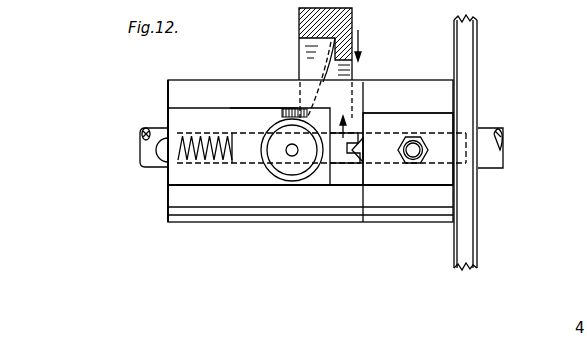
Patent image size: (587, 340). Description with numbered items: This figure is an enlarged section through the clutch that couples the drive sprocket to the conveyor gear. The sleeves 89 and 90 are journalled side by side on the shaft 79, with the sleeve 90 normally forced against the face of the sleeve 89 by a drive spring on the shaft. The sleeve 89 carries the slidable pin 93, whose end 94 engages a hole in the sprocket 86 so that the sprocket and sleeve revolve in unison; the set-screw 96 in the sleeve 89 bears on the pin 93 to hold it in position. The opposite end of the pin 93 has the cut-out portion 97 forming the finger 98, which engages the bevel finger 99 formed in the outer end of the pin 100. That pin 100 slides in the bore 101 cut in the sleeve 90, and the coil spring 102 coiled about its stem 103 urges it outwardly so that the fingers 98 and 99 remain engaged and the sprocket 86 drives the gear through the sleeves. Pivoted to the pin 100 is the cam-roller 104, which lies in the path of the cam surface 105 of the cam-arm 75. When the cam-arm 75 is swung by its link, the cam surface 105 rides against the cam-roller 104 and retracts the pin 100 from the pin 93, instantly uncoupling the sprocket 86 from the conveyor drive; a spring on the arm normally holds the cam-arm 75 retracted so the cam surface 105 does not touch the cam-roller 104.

The cam-arm 75 is at (340, 20).
The shaft 79 is at (490, 161).
The sprocket 86 is at (472, 69).
The sleeve 89 is at (402, 225).
The sleeve 90 is at (282, 215).
The slidable pin 93 is at (383, 143).
The end of pin 94 is at (465, 135).
The set-screw 96 is at (407, 167).
The cut-out portion 97 is at (365, 113).
The finger 98 is at (342, 153).
The bevel finger 99 is at (352, 118).
The pin 100 is at (250, 148).
The bore 101 is at (208, 135).
The coil spring 102 is at (197, 135).
The stem 103 is at (175, 148).
The cam-roller 104 is at (302, 165).
The cam surface 105 is at (330, 77).